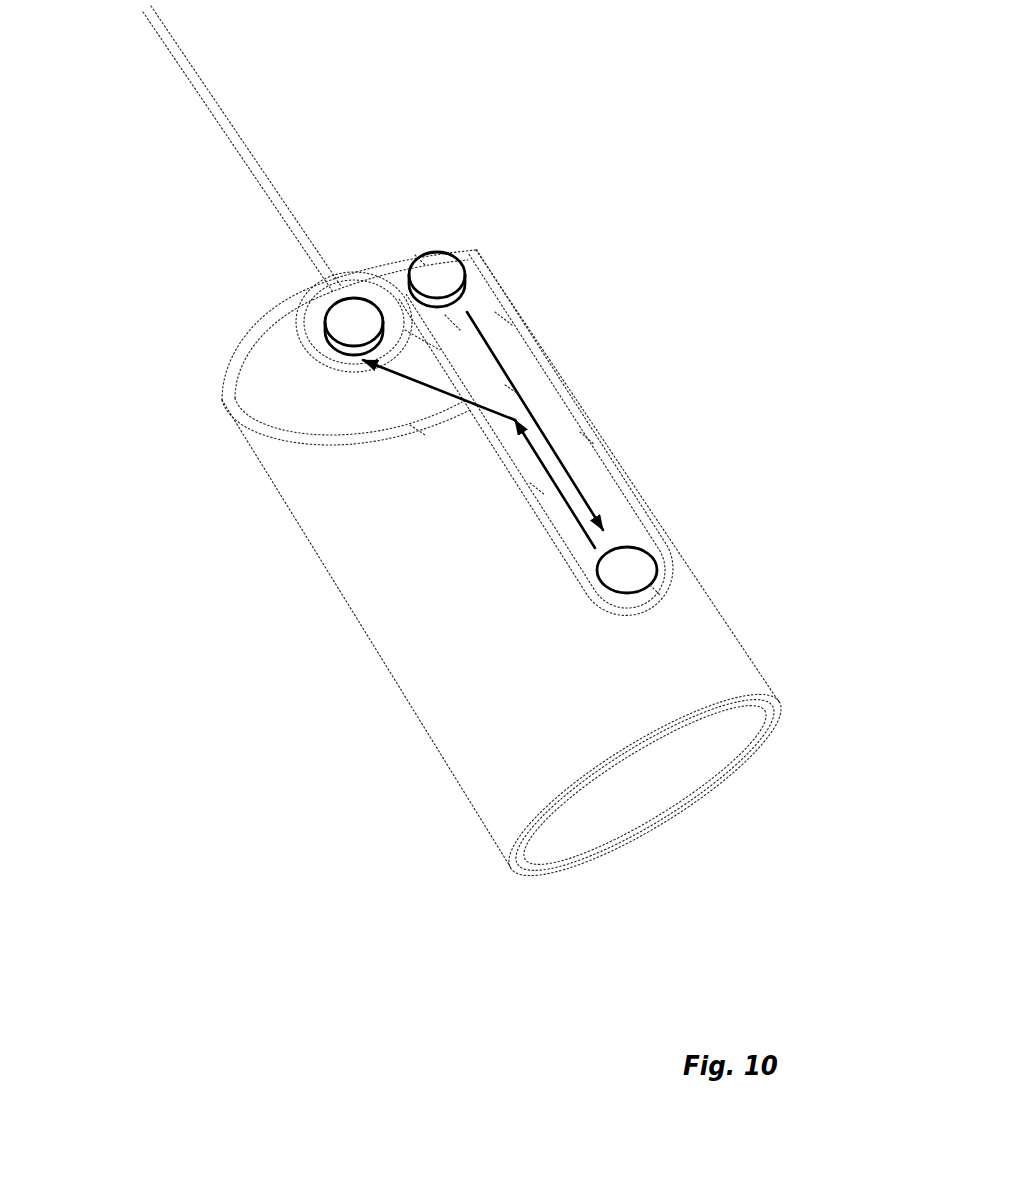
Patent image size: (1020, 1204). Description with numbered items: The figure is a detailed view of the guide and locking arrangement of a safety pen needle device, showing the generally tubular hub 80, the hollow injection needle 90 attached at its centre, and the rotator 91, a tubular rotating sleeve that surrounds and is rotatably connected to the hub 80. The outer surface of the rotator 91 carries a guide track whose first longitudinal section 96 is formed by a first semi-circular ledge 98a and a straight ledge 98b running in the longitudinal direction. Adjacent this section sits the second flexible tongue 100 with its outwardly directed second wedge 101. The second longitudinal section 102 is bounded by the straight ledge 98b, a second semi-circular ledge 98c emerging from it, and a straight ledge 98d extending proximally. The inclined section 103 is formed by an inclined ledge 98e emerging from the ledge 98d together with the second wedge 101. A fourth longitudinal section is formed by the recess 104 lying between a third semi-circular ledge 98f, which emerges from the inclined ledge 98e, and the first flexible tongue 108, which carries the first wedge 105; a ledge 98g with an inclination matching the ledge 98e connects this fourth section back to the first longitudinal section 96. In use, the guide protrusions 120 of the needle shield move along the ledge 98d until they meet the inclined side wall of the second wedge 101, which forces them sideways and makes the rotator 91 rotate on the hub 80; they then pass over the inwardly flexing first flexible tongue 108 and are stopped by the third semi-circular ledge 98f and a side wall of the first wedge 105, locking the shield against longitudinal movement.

The hub 80 is at (663, 776).
The hollow injection needle 90 is at (208, 98).
The rotator 91 is at (531, 682).
The first longitudinal section 96 is at (453, 322).
The first semi-circular ledge 98a is at (420, 262).
The straight ledge 98b is at (587, 437).
The second semi-circular ledge 98c is at (656, 590).
The straight ledge 98d is at (537, 488).
The inclined ledge 98e is at (417, 430).
The third semi-circular ledge 98f is at (330, 317).
The ledge 98g is at (430, 346).
The second flexible tongue 100 is at (503, 318).
The second wedge 101 is at (511, 388).
The second longitudinal section 102 is at (580, 512).
The inclined section 103 is at (458, 422).
The recess 104 is at (363, 360).
The first wedge 105 is at (370, 383).
The first flexible tongue 108 is at (383, 405).
The guide protrusions 120 is at (437, 253).